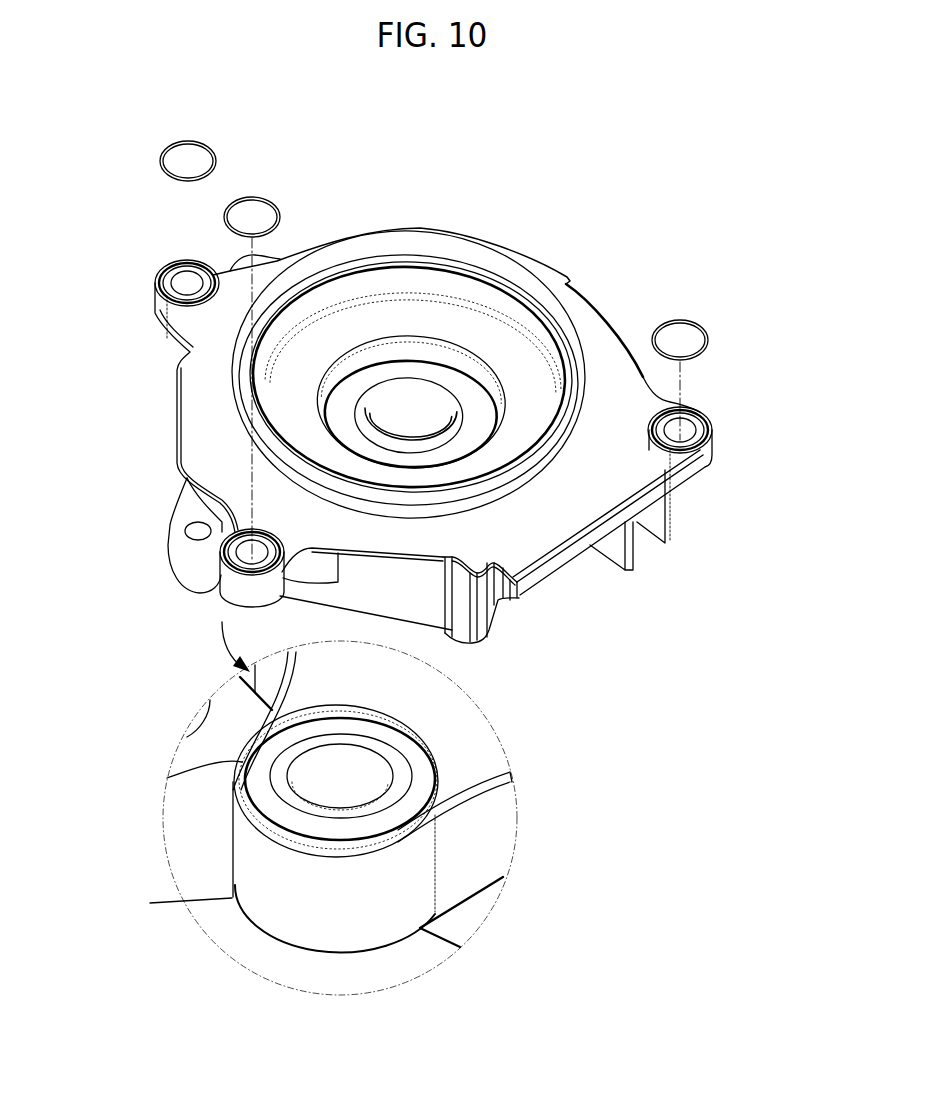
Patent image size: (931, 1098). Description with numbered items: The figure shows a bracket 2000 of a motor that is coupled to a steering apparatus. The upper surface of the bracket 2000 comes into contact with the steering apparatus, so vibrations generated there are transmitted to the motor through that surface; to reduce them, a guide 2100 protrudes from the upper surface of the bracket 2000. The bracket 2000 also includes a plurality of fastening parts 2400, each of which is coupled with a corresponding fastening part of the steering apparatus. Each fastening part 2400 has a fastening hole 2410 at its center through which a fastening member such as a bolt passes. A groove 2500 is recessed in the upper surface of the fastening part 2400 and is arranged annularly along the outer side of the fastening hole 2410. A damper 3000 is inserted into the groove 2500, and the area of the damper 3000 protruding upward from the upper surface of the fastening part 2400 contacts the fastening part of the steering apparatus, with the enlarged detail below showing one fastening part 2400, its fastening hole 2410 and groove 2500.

The bracket 2000 is at (593, 320).
The guide 2100 is at (505, 277).
The fastening part 2400 is at (165, 270).
The fastening hole 2410 is at (155, 320).
The groove 2500 is at (155, 283).
The damper 3000 is at (172, 146).